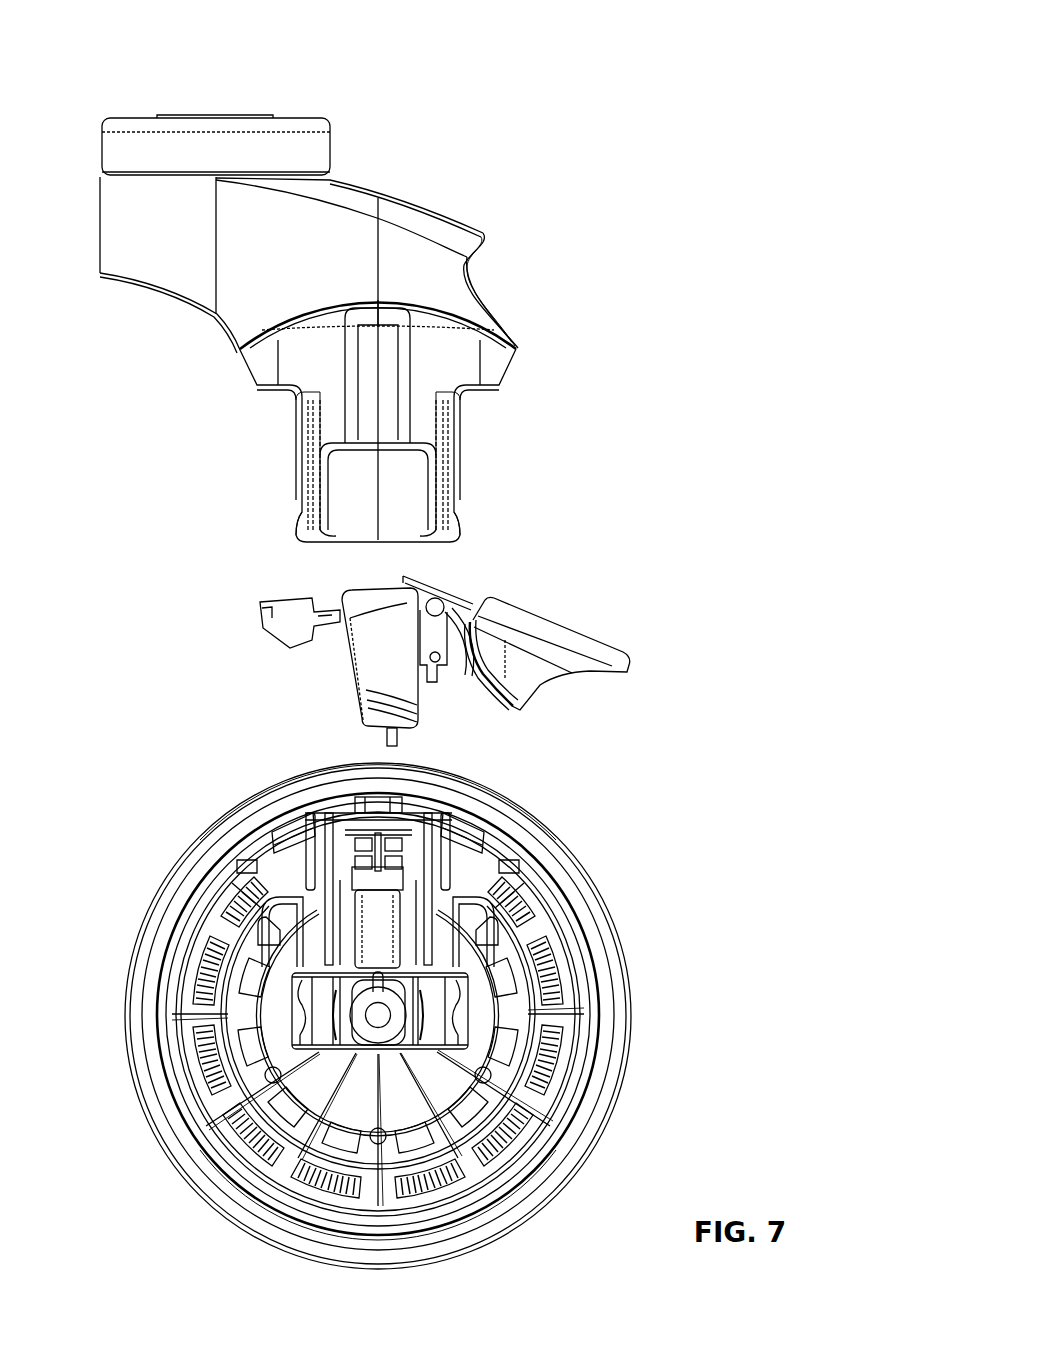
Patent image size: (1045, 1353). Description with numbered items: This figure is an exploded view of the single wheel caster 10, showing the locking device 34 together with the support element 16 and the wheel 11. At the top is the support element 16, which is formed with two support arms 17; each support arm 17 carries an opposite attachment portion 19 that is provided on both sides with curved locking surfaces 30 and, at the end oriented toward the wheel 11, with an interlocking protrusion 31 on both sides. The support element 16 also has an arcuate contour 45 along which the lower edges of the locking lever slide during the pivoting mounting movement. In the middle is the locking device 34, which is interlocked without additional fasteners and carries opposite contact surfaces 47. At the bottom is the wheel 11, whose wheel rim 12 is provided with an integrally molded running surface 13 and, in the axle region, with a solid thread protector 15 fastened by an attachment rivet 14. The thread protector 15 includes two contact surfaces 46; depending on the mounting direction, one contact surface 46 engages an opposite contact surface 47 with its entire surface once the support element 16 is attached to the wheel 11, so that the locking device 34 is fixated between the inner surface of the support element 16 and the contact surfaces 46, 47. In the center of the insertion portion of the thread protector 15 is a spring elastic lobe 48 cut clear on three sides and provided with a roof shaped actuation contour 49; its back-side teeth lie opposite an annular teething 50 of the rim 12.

The single wheel caster 10 is at (607, 122).
The support element 16 is at (396, 176).
The arcuate contour 45 is at (478, 290).
The support arm 17 is at (524, 373).
The opposite attachment portion 19 is at (373, 389).
The curved locking surface 30 is at (300, 433).
The interlocking protrusion 31 is at (300, 531).
The locking device 34 is at (601, 605).
The opposite contact surface 47 is at (478, 692).
The wheel 11 is at (615, 837).
The wheel rim 12 is at (548, 1138).
The running surface 13 is at (617, 932).
The attachment rivet 14 is at (385, 1020).
The thread protector 15 is at (520, 1003).
The contact surface 46 is at (467, 820).
The spring elastic lobe 48 is at (373, 887).
The roof shaped actuation contour 49 is at (372, 847).
The annular teething 50 is at (560, 900).